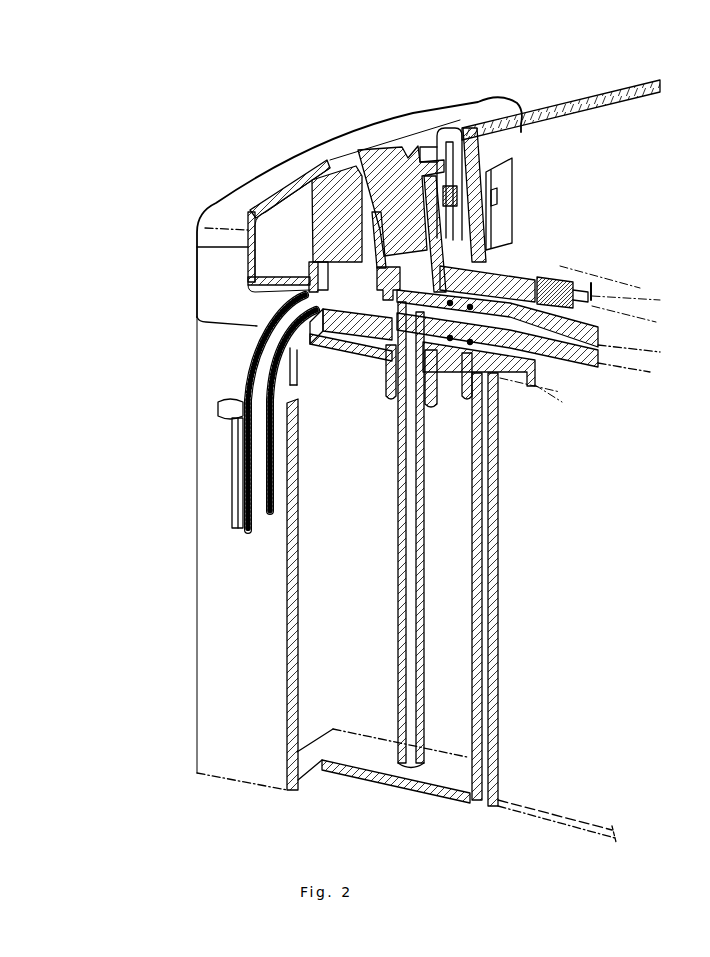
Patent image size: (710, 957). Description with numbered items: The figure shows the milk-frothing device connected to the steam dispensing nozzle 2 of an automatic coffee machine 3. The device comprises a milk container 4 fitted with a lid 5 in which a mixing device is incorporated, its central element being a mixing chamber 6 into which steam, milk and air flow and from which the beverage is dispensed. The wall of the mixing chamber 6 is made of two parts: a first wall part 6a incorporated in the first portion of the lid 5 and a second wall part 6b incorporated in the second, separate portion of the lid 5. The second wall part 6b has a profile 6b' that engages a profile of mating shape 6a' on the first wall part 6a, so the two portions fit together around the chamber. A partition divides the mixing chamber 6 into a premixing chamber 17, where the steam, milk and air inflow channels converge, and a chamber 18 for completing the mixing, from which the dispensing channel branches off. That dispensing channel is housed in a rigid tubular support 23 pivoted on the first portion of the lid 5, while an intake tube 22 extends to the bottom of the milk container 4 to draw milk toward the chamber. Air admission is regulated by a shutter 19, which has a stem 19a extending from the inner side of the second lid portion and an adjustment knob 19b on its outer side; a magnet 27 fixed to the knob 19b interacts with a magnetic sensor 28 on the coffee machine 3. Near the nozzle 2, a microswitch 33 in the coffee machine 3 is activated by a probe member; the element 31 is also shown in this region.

The steam dispensing nozzle 2 is at (598, 352).
The automatic coffee machine 3 is at (616, 82).
The milk container 4 is at (195, 688).
The lid 5 is at (195, 182).
The mixing chamber 6 is at (322, 283).
The first wall part 6a is at (412, 349).
The profile of mating shape 6a' is at (201, 261).
The second wall part 6b is at (300, 183).
The profile 6b' is at (330, 174).
The premixing chamber 17 is at (437, 377).
The chamber for completing the mixing 18 is at (336, 302).
The shutter 19 is at (404, 148).
The stem 19a is at (433, 210).
The adjustment knob 19b is at (383, 150).
The intake tube 22 is at (427, 609).
The rigid tubular support 23 is at (263, 374).
The magnet 27 is at (453, 188).
The magnetic sensor 28 is at (515, 186).
The bracket 31 is at (530, 406).
The microswitch 33 is at (564, 284).